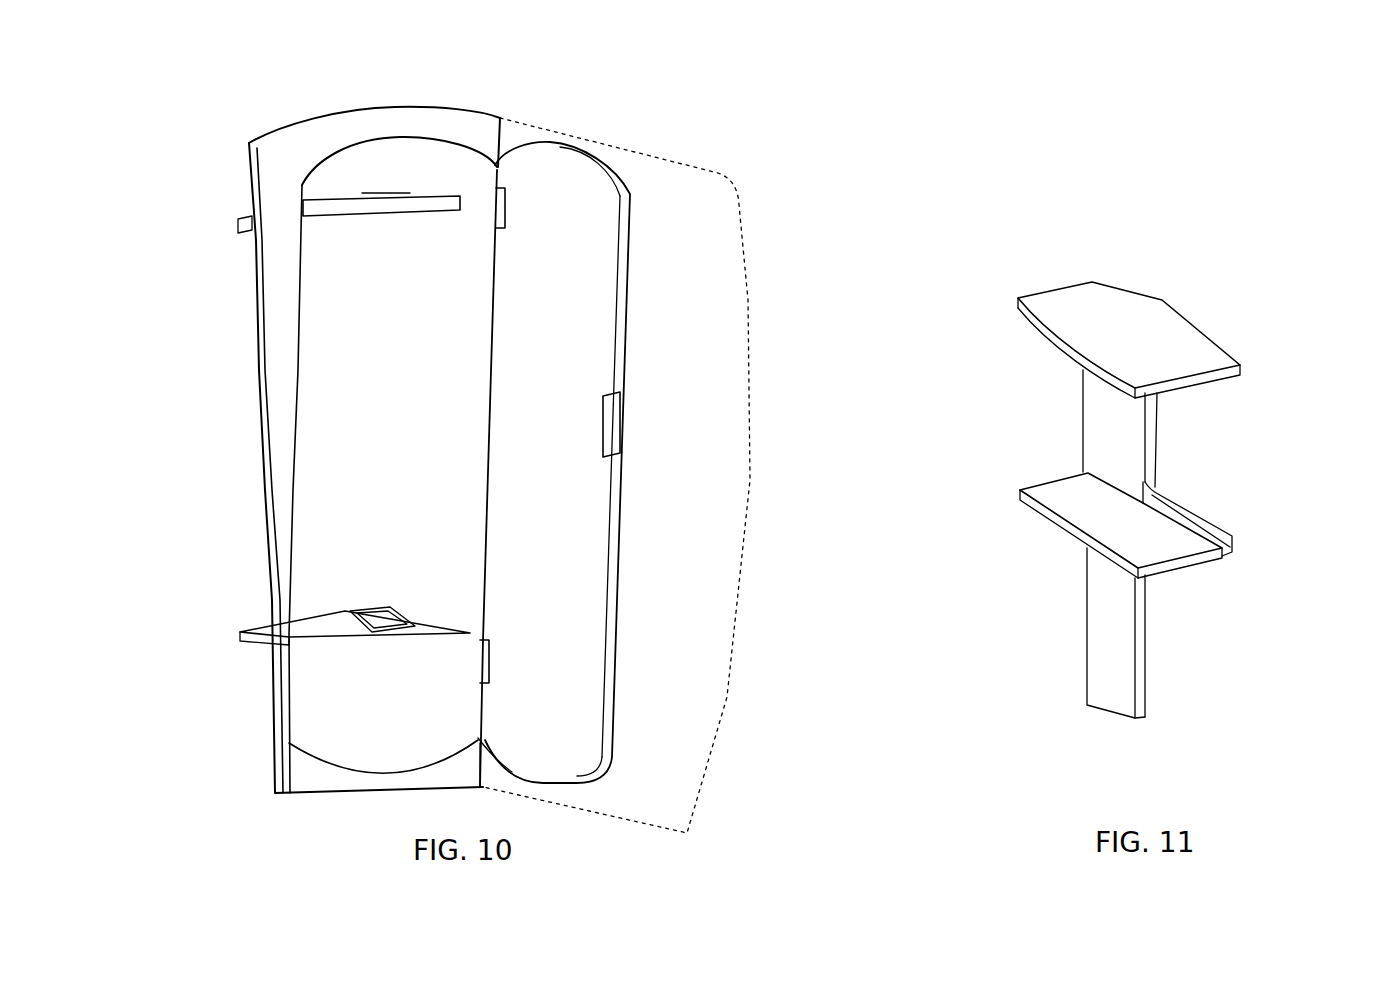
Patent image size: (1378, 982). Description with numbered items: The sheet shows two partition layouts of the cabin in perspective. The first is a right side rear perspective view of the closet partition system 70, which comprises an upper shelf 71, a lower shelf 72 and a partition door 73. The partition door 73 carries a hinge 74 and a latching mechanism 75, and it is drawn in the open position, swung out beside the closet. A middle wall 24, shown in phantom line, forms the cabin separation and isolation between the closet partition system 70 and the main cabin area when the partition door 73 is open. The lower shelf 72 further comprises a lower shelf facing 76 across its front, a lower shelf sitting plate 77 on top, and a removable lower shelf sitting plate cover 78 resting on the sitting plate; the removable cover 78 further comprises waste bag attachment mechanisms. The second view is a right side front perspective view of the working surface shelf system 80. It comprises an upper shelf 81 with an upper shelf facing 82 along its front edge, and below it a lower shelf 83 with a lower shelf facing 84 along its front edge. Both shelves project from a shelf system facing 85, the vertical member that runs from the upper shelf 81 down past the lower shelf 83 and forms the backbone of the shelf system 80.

In FIG. 10, the middle wall 24 is at (616, 475).
In FIG. 10, the closet partition system 70 is at (223, 450).
In FIG. 10, the upper shelf 71 is at (345, 200).
In FIG. 10, the lower shelf 72 is at (300, 597).
In FIG. 10, the partition door 73 is at (557, 462).
In FIG. 10, the hinge 74 is at (488, 227).
In FIG. 10, the latching mechanism 75 is at (607, 407).
In FIG. 10, the lower shelf facing 76 is at (358, 685).
In FIG. 10, the lower shelf sitting plate 77 is at (328, 625).
In FIG. 10, the removable lower shelf sitting plate cover 78 is at (370, 615).
In FIG. 11, the working surface shelf system 80 is at (1180, 255).
In FIG. 11, the upper shelf 81 is at (1180, 348).
In FIG. 11, the upper shelf facing 82 is at (1232, 382).
In FIG. 11, the lower shelf 83 is at (1215, 530).
In FIG. 11, the lower shelf facing 84 is at (1177, 547).
In FIG. 11, the shelf system facing 85 is at (1123, 657).